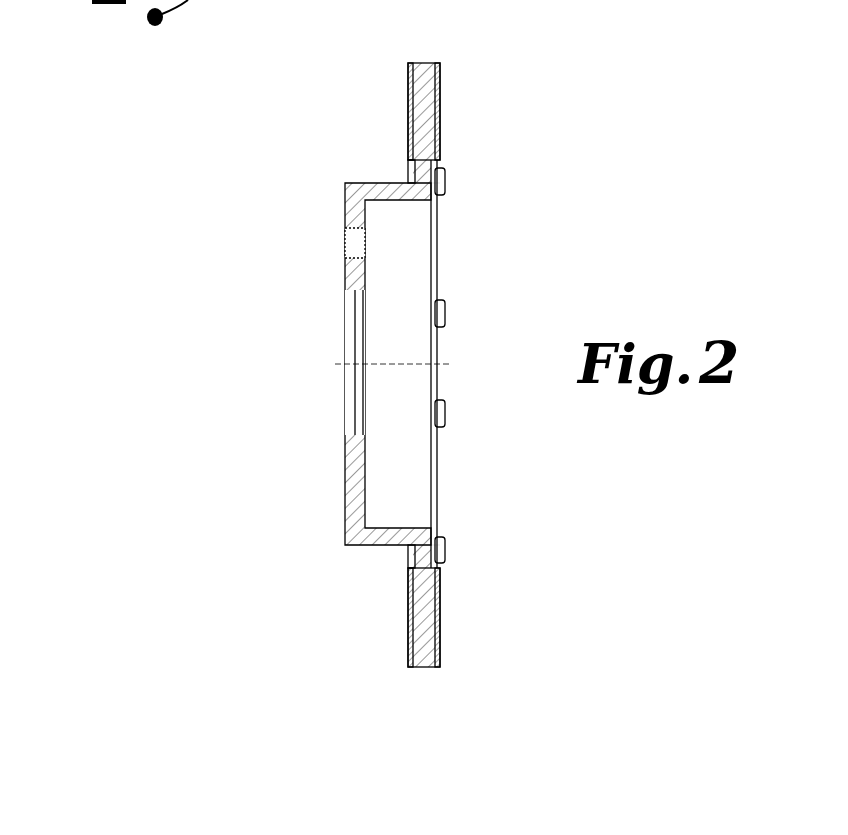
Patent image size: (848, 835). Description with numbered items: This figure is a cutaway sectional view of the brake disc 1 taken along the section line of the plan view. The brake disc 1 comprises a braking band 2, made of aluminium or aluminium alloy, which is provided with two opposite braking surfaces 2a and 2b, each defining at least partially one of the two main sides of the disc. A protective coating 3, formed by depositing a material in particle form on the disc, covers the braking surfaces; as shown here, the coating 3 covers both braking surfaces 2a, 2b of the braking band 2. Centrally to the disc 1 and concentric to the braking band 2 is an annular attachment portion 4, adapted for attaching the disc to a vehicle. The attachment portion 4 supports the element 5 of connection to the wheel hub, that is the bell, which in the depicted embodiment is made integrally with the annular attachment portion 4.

The brake disc 1 is at (160, 362).
The braking band 2 is at (426, 62).
The braking surface 2a is at (410, 77).
The braking surface 2b is at (441, 92).
The protective coating 3 is at (407, 131).
The annular attachment portion 4 is at (437, 192).
The connection element (bell) 5 is at (350, 462).